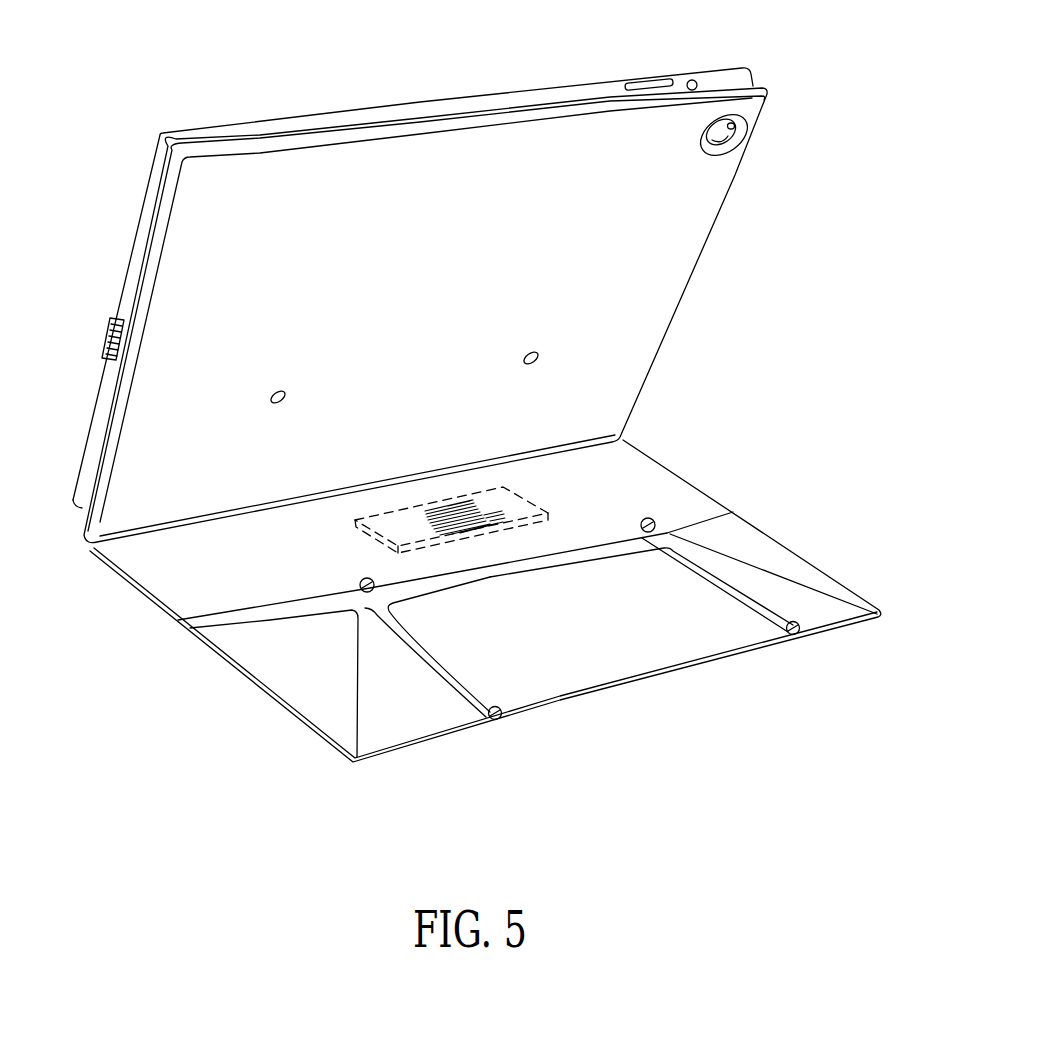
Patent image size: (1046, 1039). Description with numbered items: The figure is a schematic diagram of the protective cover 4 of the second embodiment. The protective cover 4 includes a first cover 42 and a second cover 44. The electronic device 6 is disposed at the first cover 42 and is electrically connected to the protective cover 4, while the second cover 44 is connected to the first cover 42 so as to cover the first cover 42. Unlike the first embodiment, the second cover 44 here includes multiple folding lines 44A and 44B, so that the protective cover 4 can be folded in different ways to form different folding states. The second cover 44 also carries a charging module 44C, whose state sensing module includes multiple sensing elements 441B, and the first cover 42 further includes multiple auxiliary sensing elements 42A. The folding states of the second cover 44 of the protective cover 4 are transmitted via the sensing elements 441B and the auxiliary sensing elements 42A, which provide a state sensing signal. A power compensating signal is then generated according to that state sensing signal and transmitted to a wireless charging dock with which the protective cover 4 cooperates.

The protective cover 4 is at (463, 400).
The electronic device 6 is at (597, 78).
The first cover 42 is at (406, 315).
The auxiliary sensing elements 42A is at (271, 399).
The second cover 44 is at (485, 605).
The folding line 44A is at (215, 620).
The folding line 44B is at (358, 716).
The charging module 44C is at (521, 507).
The sensing elements 441B is at (657, 524).